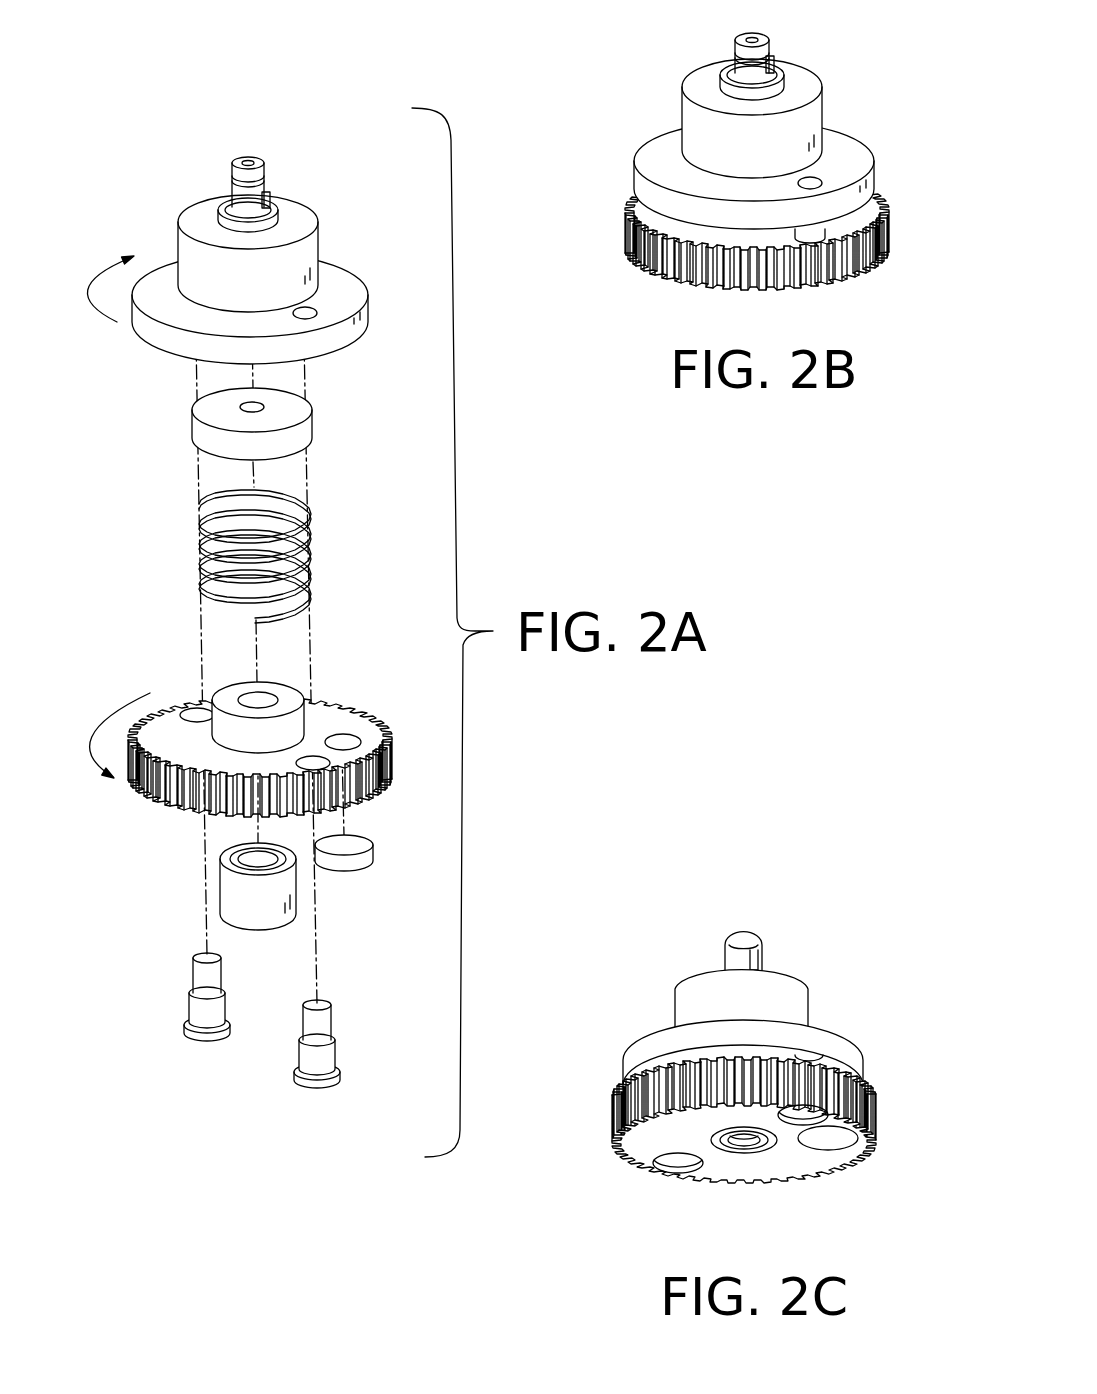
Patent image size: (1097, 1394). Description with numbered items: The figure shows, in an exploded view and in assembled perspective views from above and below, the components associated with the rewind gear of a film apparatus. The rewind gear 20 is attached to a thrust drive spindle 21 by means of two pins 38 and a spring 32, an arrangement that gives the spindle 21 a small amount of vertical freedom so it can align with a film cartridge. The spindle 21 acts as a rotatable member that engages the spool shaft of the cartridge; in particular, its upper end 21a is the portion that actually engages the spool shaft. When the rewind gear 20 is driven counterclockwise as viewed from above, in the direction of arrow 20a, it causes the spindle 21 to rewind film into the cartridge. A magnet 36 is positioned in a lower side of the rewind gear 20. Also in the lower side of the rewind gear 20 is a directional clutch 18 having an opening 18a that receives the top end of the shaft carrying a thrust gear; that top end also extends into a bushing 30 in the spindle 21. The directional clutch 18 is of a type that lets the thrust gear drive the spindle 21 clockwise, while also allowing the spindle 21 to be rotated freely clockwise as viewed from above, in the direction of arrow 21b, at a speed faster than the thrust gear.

In FIG. 2A, the directional clutch 18 is at (247, 933).
In FIG. 2C, the directional clutch 18 is at (772, 1145).
In FIG. 2C, the opening 18a is at (742, 1143).
In FIG. 2A, the rewind gear 20 is at (332, 700).
In FIG. 2B, the rewind gear 20 is at (623, 225).
In FIG. 2C, the rewind gear 20 is at (744, 1120).
In FIG. 2A, the arrow 20a is at (157, 692).
In FIG. 2A, the thrust drive spindle 21 is at (340, 268).
In FIG. 2B, the thrust drive spindle 21 is at (754, 144).
In FIG. 2C, the thrust drive spindle 21 is at (743, 1047).
In FIG. 2A, the upper end 21a is at (267, 175).
In FIG. 2B, the upper end 21a is at (773, 43).
In FIG. 2C, the upper end 21a is at (760, 952).
In FIG. 2A, the arrow 21b is at (92, 293).
In FIG. 2A, the bushing 30 is at (312, 425).
In FIG. 2A, the spring 32 is at (195, 540).
In FIG. 2A, the magnet 36 is at (345, 878).
In FIG. 2C, the magnet 36 is at (835, 1153).
In FIG. 2A, the pins 38 is at (205, 1040).
In FIG. 2C, the pins 38 is at (810, 1060).